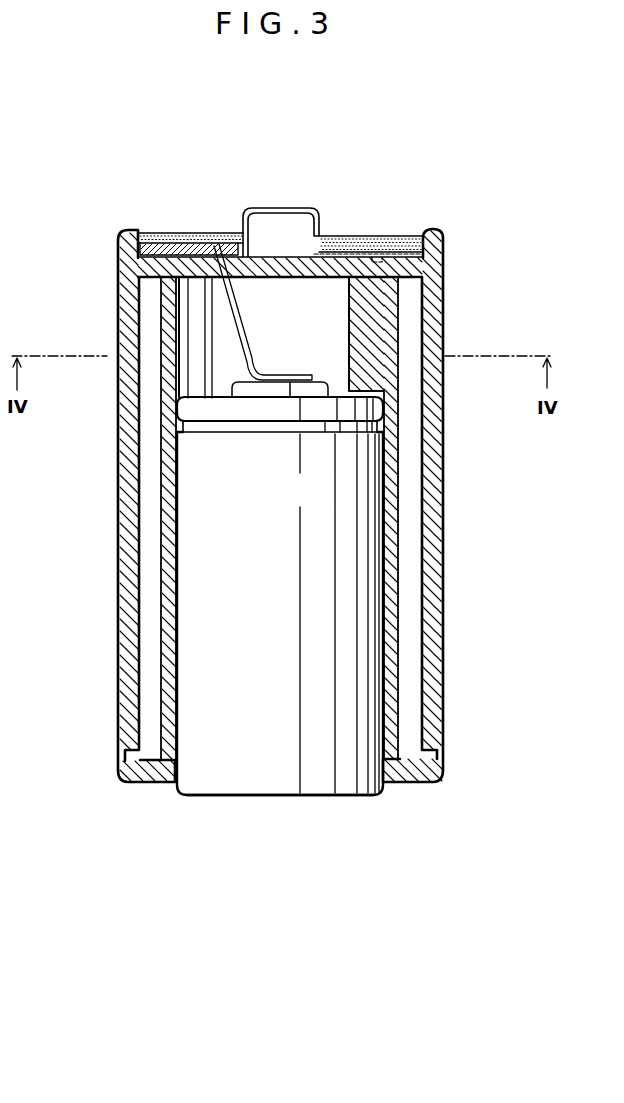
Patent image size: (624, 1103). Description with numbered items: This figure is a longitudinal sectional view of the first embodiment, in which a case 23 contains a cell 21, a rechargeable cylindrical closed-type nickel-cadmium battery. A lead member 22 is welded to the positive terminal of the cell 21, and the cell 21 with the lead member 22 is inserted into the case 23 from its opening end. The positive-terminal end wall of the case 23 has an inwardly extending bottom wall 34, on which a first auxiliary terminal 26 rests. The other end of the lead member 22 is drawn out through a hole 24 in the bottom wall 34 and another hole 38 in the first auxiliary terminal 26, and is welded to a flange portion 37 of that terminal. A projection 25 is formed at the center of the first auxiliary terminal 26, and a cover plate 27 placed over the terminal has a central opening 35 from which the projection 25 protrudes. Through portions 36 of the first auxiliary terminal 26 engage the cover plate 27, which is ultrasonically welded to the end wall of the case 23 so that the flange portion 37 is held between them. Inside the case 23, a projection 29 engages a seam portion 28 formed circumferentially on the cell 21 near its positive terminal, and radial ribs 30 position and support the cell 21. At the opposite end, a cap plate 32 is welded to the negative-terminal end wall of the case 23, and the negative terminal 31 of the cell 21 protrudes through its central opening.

The cell 21 is at (374, 637).
The lead member 22 is at (225, 333).
The case 23 is at (444, 386).
The hole 24 is at (212, 258).
The projection 25 is at (320, 212).
The first auxiliary terminal 26 is at (337, 266).
The cover plate 27 is at (405, 234).
The seam portion 28 is at (292, 425).
The projection 29 is at (384, 422).
The radial ribs 30 is at (193, 370).
The negative terminal 31 is at (333, 797).
The cap plate 32 is at (428, 784).
The bottom wall 34 is at (262, 275).
The opening 35 is at (238, 246).
The through portions 36 is at (425, 249).
The flange portion 37 is at (162, 237).
The hole 38 is at (205, 243).